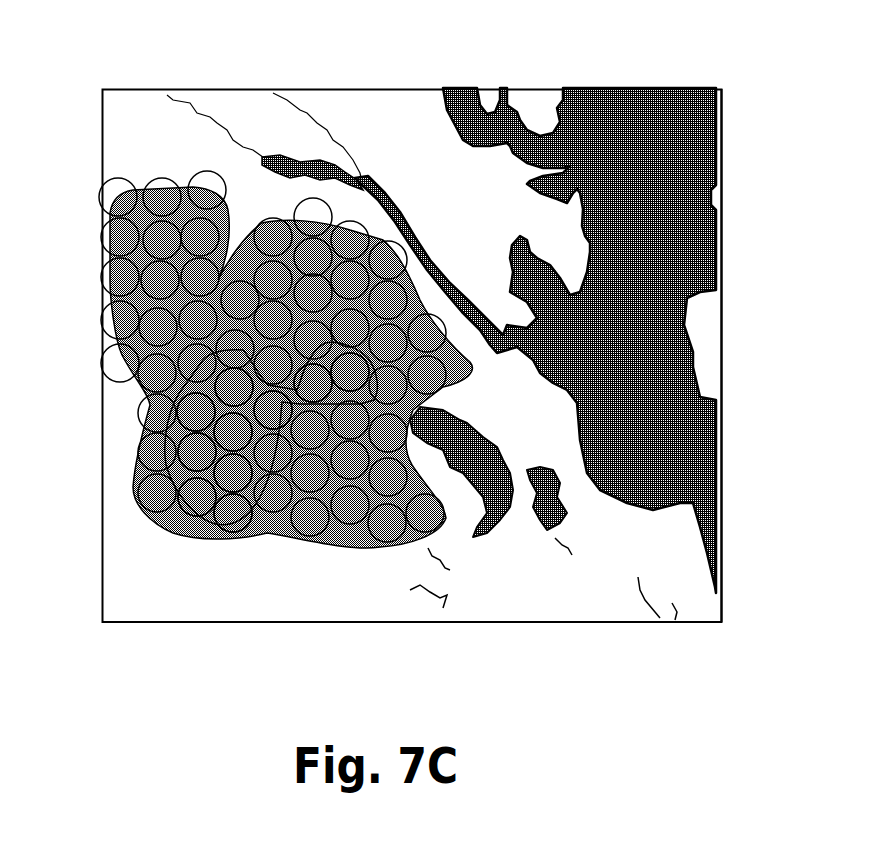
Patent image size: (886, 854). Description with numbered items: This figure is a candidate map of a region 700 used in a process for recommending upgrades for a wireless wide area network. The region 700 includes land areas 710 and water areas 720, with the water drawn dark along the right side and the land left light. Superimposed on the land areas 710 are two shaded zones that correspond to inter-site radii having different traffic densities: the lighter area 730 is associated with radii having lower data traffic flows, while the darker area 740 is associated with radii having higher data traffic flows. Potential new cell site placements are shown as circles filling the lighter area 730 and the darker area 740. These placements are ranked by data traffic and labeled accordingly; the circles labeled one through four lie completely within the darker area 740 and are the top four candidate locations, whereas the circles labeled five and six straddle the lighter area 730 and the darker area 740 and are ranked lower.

The region 700 is at (73, 33).
The land areas 710 is at (361, 356).
The water areas 720 is at (578, 340).
The lighter area 730 is at (240, 359).
The darker area 740 is at (192, 433).